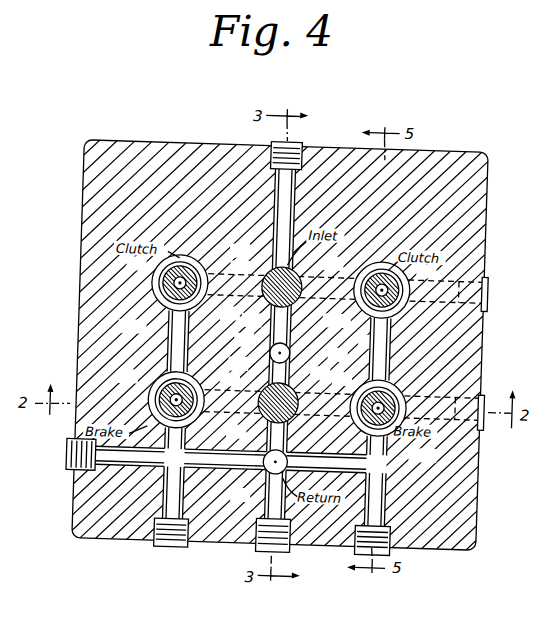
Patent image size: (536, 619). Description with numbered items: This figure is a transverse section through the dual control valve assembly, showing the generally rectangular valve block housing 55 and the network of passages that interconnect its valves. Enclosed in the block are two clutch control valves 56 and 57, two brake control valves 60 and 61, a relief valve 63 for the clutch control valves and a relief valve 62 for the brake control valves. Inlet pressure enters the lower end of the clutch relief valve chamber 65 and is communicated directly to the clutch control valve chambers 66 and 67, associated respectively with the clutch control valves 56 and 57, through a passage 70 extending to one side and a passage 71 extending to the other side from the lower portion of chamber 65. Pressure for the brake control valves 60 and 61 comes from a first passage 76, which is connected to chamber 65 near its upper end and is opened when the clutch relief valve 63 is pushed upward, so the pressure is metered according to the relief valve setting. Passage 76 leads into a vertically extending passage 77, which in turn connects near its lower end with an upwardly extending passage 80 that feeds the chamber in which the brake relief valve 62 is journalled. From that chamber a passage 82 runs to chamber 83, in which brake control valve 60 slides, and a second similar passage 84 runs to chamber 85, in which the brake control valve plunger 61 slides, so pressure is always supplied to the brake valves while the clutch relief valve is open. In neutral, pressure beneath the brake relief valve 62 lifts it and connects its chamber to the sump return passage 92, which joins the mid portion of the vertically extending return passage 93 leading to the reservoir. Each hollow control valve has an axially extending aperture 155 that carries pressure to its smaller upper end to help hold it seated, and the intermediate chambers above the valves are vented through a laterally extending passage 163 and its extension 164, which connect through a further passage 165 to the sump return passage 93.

The valve block housing 55 is at (481, 178).
The clutch control valve 56 is at (170, 286).
The clutch control valve 57 is at (393, 288).
The brake control valve 60 is at (171, 391).
The brake control valve 61 is at (394, 398).
The brake relief valve 62 is at (272, 393).
The clutch relief valve 63 is at (273, 282).
The clutch relief valve chamber 65 is at (264, 282).
The clutch control valve chamber 66 is at (170, 280).
The clutch control valve chamber 67 is at (391, 279).
The passage 70 is at (235, 309).
The passage 71 is at (328, 285).
The first passage 76 is at (274, 321).
The vertically extending passage 77 is at (272, 352).
The upwardly extending passage 80 is at (292, 376).
The passage 82 is at (254, 399).
The chamber 83 is at (172, 400).
The second passage 84 is at (352, 384).
The chamber 85 is at (370, 392).
The sump return passage 92 is at (271, 432).
The vertically extending return passage 93 is at (272, 480).
The axially extending aperture 155 is at (348, 326).
The laterally extending passage 163 is at (165, 326).
The extension of passage 164 is at (151, 467).
The passage 165 is at (350, 468).